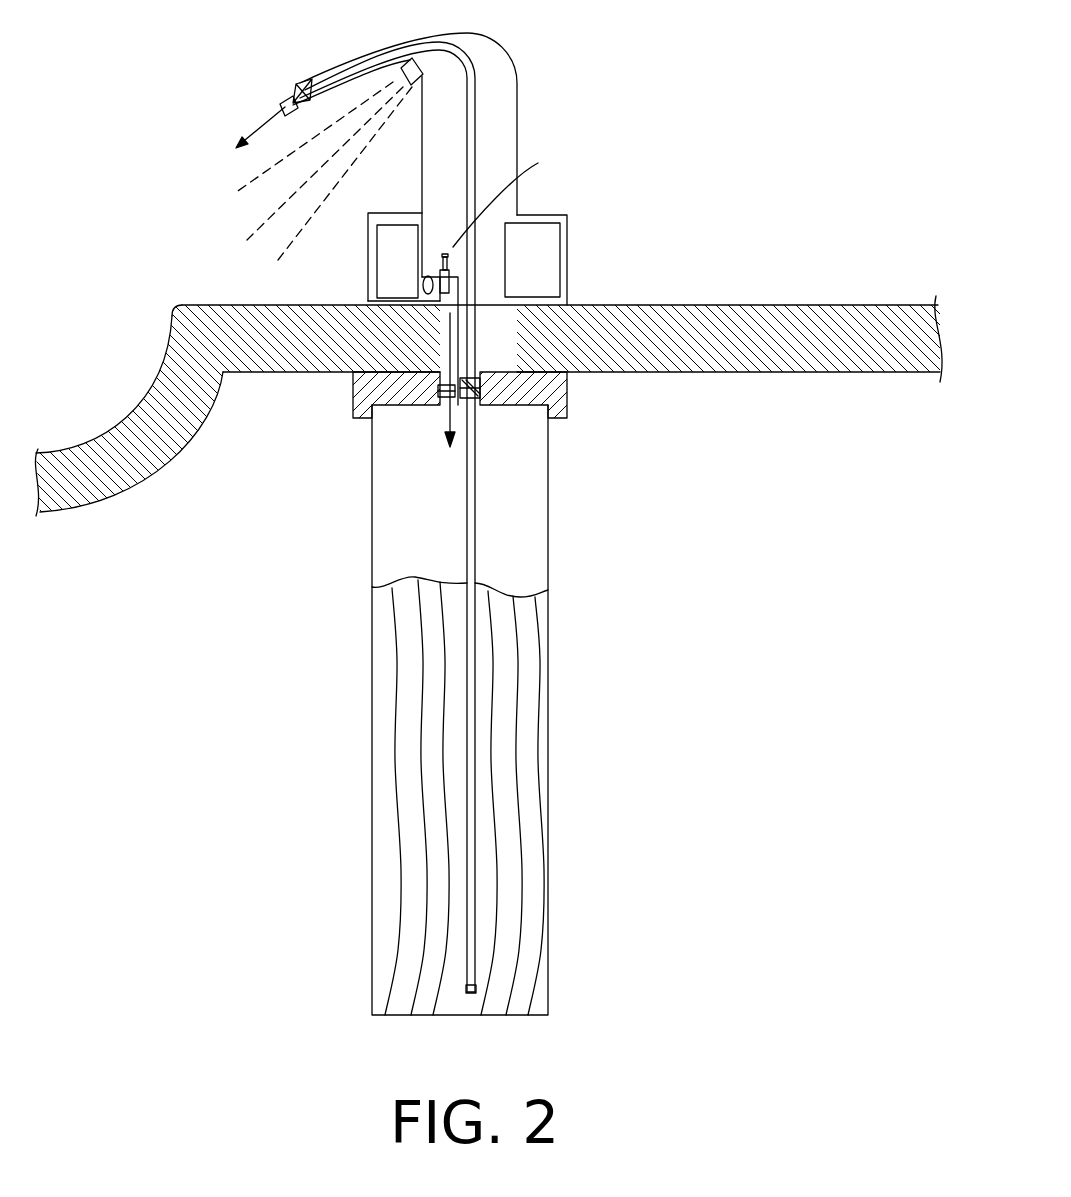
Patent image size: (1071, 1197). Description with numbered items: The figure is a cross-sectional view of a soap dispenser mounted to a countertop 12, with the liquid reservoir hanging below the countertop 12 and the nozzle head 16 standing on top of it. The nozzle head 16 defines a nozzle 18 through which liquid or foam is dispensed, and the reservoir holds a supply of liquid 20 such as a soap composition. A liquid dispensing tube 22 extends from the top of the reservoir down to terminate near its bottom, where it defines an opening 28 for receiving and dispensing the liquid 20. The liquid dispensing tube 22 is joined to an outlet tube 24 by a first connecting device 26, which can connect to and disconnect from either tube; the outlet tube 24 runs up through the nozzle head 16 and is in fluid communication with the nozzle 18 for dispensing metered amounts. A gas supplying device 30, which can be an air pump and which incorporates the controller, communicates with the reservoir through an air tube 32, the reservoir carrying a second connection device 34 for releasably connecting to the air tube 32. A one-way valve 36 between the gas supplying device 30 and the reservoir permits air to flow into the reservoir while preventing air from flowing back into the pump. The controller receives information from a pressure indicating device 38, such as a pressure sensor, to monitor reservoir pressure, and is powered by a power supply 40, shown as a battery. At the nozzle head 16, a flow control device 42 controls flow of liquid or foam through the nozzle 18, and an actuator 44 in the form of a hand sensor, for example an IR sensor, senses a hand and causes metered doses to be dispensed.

The countertop 12 is at (825, 363).
The nozzle head 16 is at (495, 64).
The nozzle 18 is at (280, 104).
The liquid 20 is at (540, 805).
The liquid dispensing tube 22 is at (473, 716).
The outlet tube 24 is at (470, 147).
The first connecting device 26 is at (480, 387).
The opening 28 is at (470, 990).
The gas supplying device 30 is at (384, 295).
The air tube 32 is at (450, 333).
The second connection device 34 is at (478, 393).
The one-way valve 36 is at (440, 300).
The pressure indicating device 38 is at (453, 277).
The power supply 40 is at (551, 272).
The flow control device 42 is at (297, 93).
The actuator 44 is at (416, 75).